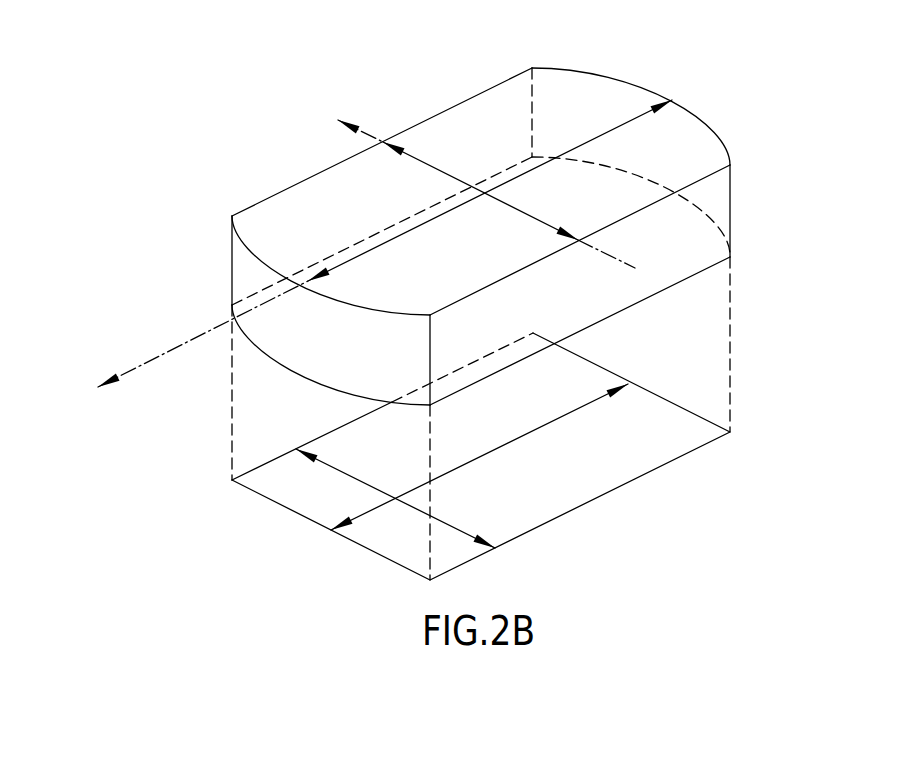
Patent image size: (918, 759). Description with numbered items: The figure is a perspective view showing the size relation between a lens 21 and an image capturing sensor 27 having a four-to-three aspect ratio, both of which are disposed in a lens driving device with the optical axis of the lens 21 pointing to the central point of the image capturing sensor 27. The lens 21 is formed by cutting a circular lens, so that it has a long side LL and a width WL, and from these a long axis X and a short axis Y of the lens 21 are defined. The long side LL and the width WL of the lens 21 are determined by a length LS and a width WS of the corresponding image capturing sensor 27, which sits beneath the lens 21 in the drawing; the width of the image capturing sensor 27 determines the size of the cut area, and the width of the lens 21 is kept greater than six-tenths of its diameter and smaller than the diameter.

The lens 21 is at (722, 140).
The image capturing sensor 27 is at (707, 443).
The long axis X is at (184, 362).
The short axis Y is at (476, 182).
The long side LL is at (490, 190).
The width WL is at (480, 192).
The length LS is at (479, 457).
The width WS is at (395, 498).